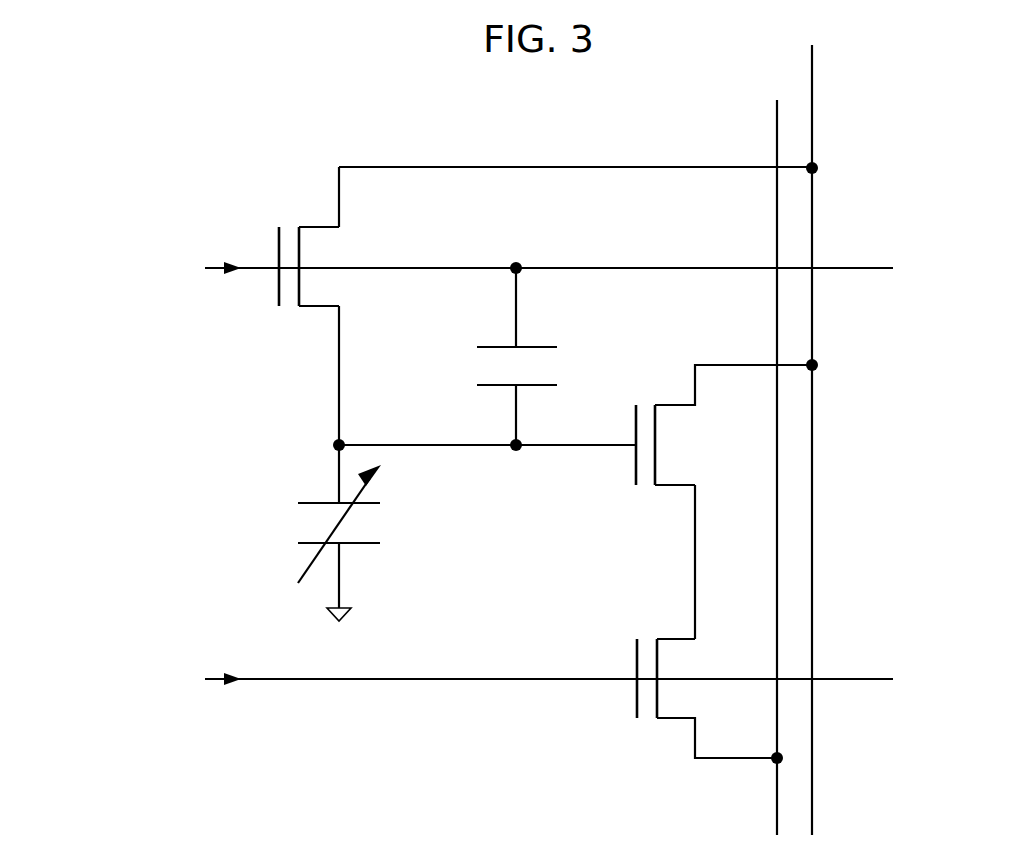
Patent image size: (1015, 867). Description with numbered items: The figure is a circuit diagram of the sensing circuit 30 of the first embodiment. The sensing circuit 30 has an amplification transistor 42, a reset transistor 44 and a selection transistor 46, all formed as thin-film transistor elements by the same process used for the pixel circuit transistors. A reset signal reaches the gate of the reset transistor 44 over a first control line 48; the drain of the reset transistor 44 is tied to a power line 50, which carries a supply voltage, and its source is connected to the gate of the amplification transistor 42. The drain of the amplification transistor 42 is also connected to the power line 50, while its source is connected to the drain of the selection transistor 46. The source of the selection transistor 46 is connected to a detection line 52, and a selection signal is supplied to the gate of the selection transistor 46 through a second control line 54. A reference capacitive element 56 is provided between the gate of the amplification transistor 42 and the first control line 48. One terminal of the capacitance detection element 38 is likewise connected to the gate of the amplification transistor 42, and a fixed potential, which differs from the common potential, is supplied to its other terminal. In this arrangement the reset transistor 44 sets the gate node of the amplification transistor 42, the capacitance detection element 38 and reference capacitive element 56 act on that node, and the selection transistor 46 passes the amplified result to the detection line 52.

The sensing circuit 30 is at (966, 145).
The capacitance detection element 38 is at (296, 527).
The amplification transistor 42 is at (630, 470).
The reset transistor 44 is at (271, 297).
The selection transistor 46 is at (632, 660).
The first control line 48 is at (843, 268).
The power line 50 is at (812, 112).
The detection line 52 is at (777, 120).
The second control line 54 is at (835, 679).
The reference capacitive element 56 is at (482, 377).